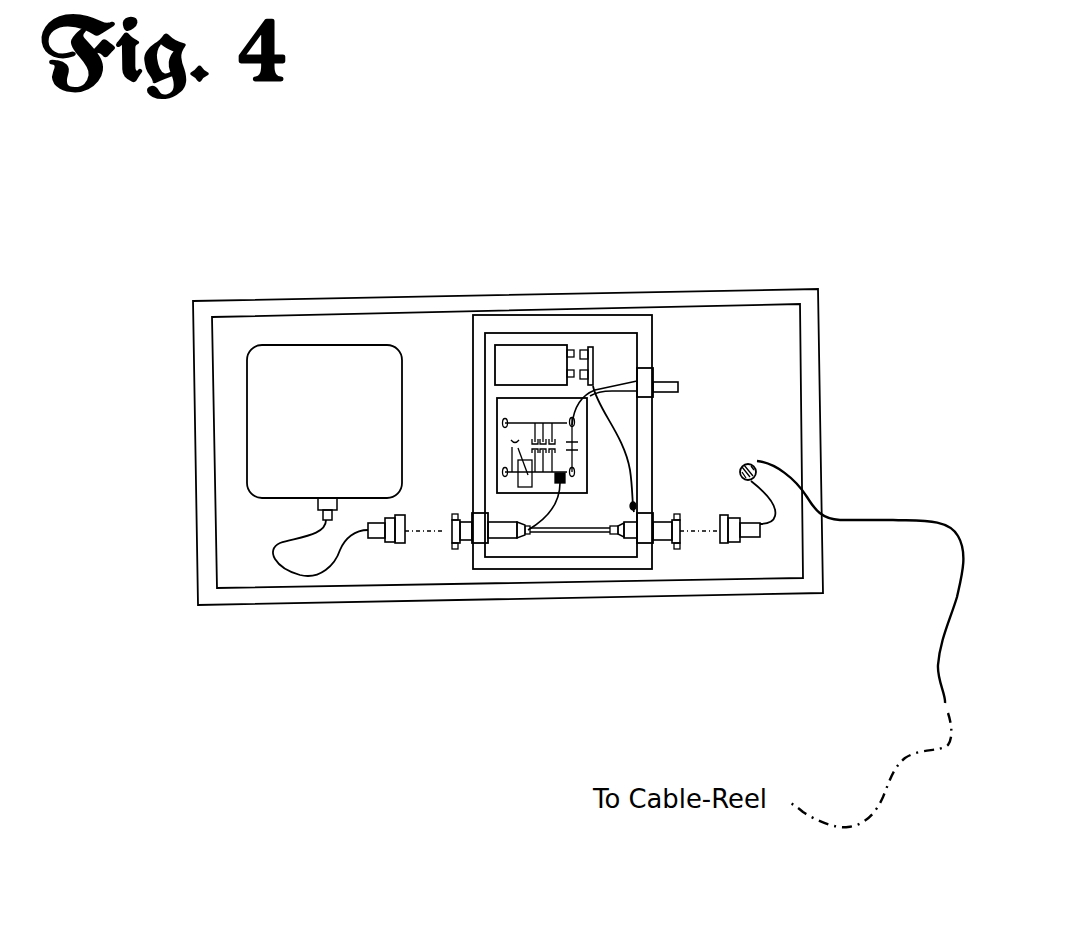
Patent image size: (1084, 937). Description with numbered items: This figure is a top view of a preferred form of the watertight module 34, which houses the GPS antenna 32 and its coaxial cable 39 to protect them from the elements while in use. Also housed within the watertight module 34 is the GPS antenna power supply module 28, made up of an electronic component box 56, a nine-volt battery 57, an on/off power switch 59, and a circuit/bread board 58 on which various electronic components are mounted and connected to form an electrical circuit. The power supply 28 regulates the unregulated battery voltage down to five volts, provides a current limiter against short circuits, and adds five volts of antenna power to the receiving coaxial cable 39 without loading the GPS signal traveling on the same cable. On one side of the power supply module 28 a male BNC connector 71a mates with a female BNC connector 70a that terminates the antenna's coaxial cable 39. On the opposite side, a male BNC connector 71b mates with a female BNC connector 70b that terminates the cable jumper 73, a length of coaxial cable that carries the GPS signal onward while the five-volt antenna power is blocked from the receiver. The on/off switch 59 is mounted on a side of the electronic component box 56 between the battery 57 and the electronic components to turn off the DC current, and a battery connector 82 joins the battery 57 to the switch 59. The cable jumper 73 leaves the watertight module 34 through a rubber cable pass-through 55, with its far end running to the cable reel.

The GPS antenna power supply module 28 is at (622, 315).
The GPS antenna 32 is at (252, 347).
The watertight module 34 is at (277, 603).
The RG-174 coaxial cable 39 is at (270, 543).
The rubber cable pass-through 55 is at (760, 458).
The electronic component box 56 is at (655, 332).
The nine-volt battery 57 is at (532, 345).
The circuit/bread board 58 is at (497, 437).
The on/off power switch 59 is at (683, 388).
The female BNC connector 70a is at (392, 543).
The female BNC connector 70b is at (733, 542).
The male BNC connector 71a is at (457, 545).
The male BNC connector 71b is at (670, 542).
The RG-58 cable jumper 73 is at (893, 522).
The battery connector 82 is at (588, 345).